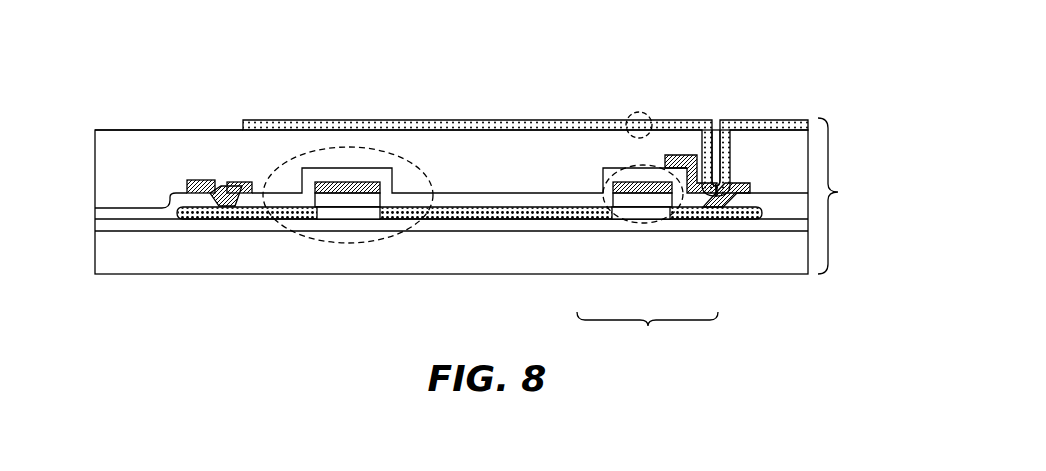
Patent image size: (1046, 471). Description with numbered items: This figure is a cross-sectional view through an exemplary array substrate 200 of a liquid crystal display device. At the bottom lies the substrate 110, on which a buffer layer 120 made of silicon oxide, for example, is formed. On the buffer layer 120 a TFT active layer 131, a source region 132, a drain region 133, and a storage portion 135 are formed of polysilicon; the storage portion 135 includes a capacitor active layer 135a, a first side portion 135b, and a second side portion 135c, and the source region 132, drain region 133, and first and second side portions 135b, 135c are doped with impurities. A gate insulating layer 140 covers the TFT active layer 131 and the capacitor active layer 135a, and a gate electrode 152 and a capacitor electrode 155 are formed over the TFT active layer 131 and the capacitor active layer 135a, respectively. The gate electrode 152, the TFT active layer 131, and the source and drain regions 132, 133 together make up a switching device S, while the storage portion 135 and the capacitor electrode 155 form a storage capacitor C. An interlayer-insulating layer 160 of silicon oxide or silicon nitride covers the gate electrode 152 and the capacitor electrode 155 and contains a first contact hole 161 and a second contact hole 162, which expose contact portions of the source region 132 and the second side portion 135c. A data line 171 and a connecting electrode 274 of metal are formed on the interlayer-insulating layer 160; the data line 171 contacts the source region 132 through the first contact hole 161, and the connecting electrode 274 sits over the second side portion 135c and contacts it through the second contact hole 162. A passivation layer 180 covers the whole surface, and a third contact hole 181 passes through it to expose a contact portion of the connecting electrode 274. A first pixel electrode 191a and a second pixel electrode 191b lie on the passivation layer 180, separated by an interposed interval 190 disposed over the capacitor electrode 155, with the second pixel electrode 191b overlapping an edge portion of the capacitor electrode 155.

The substrate 110 is at (469, 236).
The buffer layer 120 is at (515, 220).
The TFT active layer 131 is at (337, 219).
The source region 132 is at (270, 219).
The drain region 133 is at (403, 219).
The storage portion 135 is at (647, 329).
The capacitor active layer 135a is at (643, 219).
The first side portion 135b is at (598, 219).
The second side portion 135c is at (702, 212).
The gate insulating layer 140 is at (322, 176).
The gate electrode 152 is at (378, 172).
The capacitor electrode 155 is at (633, 180).
The interlayer-insulating layer 160 is at (127, 209).
The first contact hole 161 is at (224, 172).
The second contact hole 162 is at (731, 179).
The data line 171 is at (223, 206).
The passivation layer 180 is at (172, 168).
The third contact hole 181 is at (716, 110).
The interposed interval 190 is at (645, 112).
The first pixel electrode 191a is at (497, 120).
The second pixel electrode 191b is at (773, 120).
The array substrate 200 is at (485, 196).
The connecting electrode 274 is at (733, 196).
The switching device S is at (413, 165).
The storage capacitor C is at (617, 172).